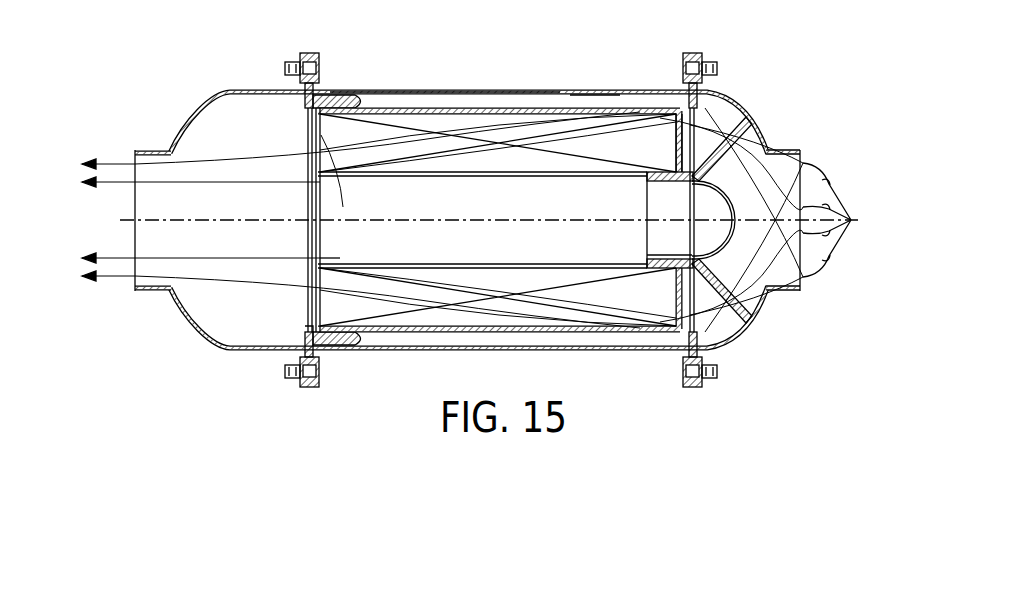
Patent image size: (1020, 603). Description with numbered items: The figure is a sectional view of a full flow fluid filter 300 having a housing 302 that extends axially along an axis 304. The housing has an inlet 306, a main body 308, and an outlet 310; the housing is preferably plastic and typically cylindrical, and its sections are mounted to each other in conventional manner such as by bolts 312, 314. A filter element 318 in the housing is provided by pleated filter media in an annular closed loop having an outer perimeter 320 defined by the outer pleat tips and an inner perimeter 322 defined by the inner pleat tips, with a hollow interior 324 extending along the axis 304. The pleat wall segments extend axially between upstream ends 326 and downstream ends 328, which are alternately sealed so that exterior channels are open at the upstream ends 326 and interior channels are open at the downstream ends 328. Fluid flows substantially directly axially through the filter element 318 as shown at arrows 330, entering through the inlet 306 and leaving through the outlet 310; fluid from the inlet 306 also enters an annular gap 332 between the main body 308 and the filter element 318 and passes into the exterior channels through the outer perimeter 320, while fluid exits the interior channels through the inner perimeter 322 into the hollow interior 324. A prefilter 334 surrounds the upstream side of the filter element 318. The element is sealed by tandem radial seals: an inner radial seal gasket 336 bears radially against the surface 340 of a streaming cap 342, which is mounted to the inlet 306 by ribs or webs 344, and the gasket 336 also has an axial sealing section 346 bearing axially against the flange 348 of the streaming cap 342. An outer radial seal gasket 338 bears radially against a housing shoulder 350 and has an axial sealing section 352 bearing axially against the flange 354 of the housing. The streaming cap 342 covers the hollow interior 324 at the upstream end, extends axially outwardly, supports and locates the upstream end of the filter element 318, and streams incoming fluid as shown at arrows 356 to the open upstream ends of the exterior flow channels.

The full flow fluid filter 300 is at (382, 56).
The housing 302 is at (421, 84).
The axis 304 is at (468, 217).
The inlet 306 is at (778, 151).
The main body 308 is at (506, 87).
The outlet 310 is at (150, 151).
The bolt 312 is at (700, 60).
The bolt 314 is at (286, 68).
The filter element 318 is at (536, 124).
The outer perimeter 320 is at (507, 122).
The inner perimeter 322 is at (481, 178).
The hollow interior 324 is at (503, 253).
The upstream ends 326 is at (677, 152).
The downstream ends 328 is at (322, 137).
The arrows 330 is at (113, 167).
The annular gap 332 is at (588, 100).
The prefilter 334 is at (632, 110).
The inner radial seal gasket 336 is at (648, 268).
The outer radial seal gasket 338 is at (347, 325).
The surface of streaming cap 340 is at (657, 259).
The streaming cap 342 is at (800, 276).
The ribs or webs 344 is at (800, 161).
The axial sealing section 346 is at (660, 272).
The flange of streaming cap 348 is at (748, 310).
The housing shoulder 350 is at (345, 337).
The axial sealing section 352 is at (325, 325).
The flange of the housing 354 is at (306, 330).
The arrows 356 is at (848, 220).